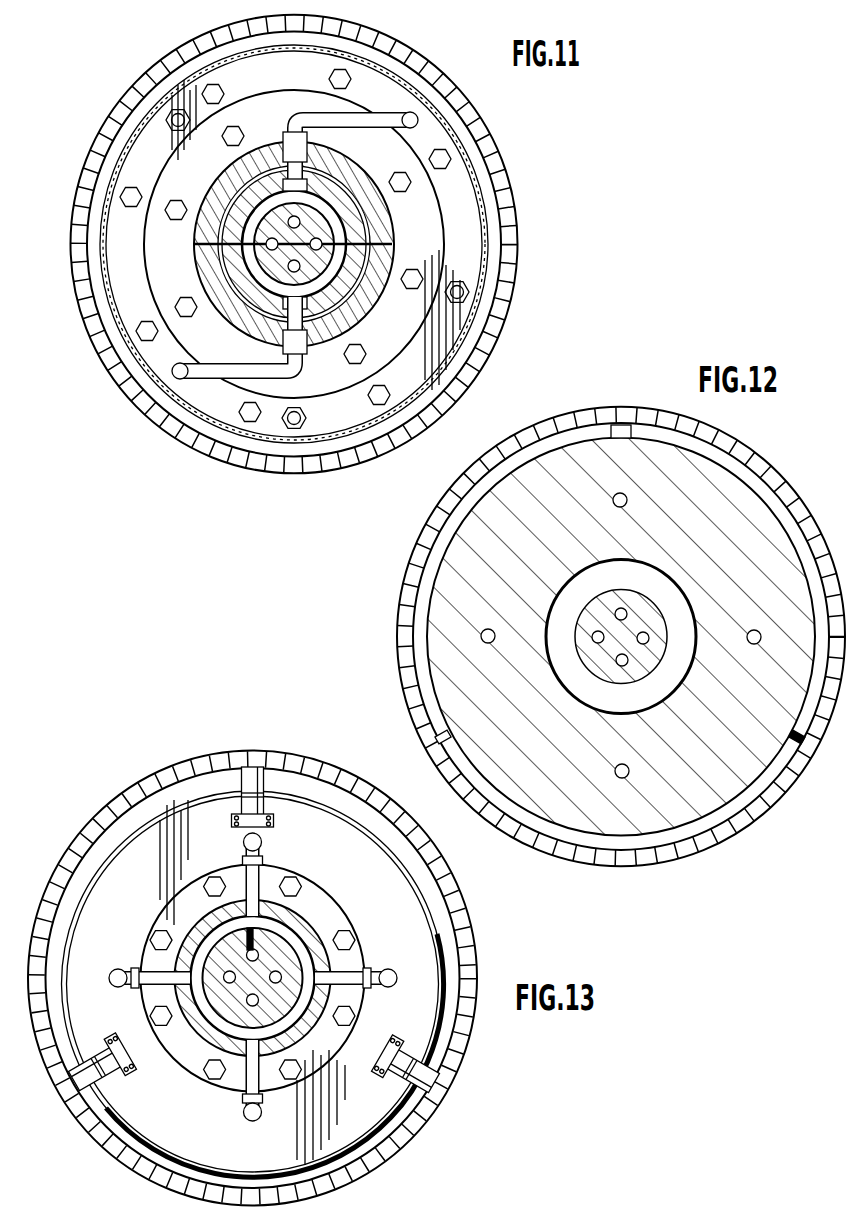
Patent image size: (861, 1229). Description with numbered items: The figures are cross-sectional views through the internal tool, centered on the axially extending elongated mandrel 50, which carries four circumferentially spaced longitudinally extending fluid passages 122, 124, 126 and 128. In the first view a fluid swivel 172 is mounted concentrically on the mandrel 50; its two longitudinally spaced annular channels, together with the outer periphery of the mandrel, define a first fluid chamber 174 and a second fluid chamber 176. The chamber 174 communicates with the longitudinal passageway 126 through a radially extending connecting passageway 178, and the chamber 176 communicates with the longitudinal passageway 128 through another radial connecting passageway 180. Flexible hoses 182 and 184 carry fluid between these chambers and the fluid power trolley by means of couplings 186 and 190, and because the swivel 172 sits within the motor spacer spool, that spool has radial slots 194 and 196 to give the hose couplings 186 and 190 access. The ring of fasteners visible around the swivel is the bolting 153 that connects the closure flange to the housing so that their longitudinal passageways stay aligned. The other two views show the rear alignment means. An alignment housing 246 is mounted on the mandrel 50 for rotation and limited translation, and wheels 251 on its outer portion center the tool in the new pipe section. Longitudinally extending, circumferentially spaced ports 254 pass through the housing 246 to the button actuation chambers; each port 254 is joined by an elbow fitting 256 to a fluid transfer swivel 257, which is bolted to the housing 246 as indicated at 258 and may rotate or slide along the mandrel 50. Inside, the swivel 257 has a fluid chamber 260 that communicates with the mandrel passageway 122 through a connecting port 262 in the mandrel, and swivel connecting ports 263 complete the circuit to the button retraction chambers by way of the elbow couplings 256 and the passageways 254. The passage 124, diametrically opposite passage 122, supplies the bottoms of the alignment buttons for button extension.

In FIG. 11, the bolting 153 is at (203, 88).
In FIG. 11, the flexible hose 182 is at (355, 113).
In FIG. 11, the flexible hose 184 is at (224, 378).
In FIG. 11, the coupling 186 is at (283, 140).
In FIG. 11, the coupling 190 is at (278, 344).
In FIG. 11, the radial slot 194 is at (308, 157).
In FIG. 11, the radial slot 196 is at (308, 346).
In FIG. 11, the first fluid chamber 174 is at (330, 172).
In FIG. 11, the fluid swivel 172 is at (402, 170).
In FIG. 11, the radial connecting passageway 178 is at (250, 210).
In FIG. 11, the radial connecting passageway 180 is at (340, 276).
In FIG. 11, the second fluid chamber 176 is at (396, 247).
In FIG. 11, the fluid passage 128 is at (324, 232).
In FIG. 12, the fluid passage 128 is at (650, 638).
In FIG. 13, the fluid passage 128 is at (225, 992).
In FIG. 11, the fluid passage 126 is at (263, 243).
In FIG. 12, the fluid passage 126 is at (591, 637).
In FIG. 13, the fluid passage 126 is at (281, 972).
In FIG. 12, the fluid passage 122 is at (622, 607).
In FIG. 13, the fluid passage 122 is at (259, 948).
In FIG. 12, the fluid passage 124 is at (621, 667).
In FIG. 13, the fluid passage 124 is at (243, 1010).
In FIG. 12, the alignment housing 246 is at (782, 540).
In FIG. 12, the port 254 is at (626, 494).
In FIG. 13, the wheel 251 is at (254, 768).
In FIG. 13, the elbow fitting 256 is at (262, 850).
In FIG. 13, the bolting 258 is at (268, 885).
In FIG. 13, the connecting port 262 is at (243, 936).
In FIG. 13, the swivel connecting port 263 is at (236, 908).
In FIG. 13, the fluid transfer swivel 257 is at (330, 938).
In FIG. 13, the mandrel 50 is at (293, 1020).
In FIG. 13, the fluid chamber 260 is at (337, 1042).